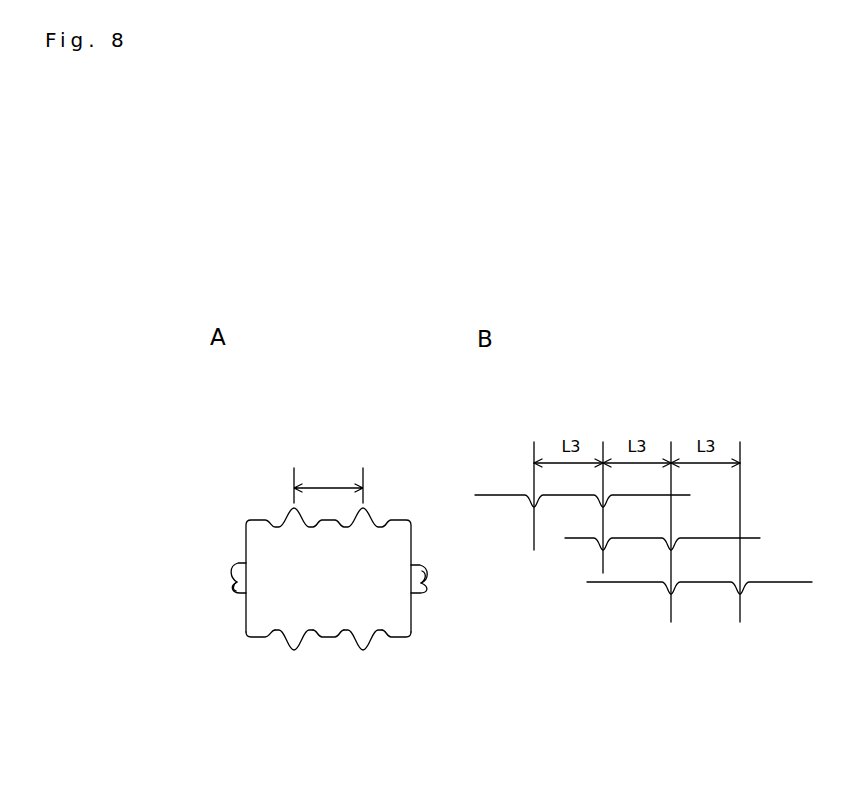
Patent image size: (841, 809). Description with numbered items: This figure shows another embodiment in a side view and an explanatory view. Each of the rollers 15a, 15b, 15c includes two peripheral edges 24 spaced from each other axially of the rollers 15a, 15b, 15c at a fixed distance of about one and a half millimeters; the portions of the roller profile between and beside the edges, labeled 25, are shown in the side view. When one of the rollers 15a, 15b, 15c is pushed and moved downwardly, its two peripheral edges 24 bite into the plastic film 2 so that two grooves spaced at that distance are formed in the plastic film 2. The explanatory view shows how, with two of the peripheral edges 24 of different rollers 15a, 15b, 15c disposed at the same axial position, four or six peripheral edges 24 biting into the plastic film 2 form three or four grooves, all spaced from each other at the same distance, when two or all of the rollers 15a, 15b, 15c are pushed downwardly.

The plastic film 2 is at (495, 494).
The roller 15a is at (288, 546).
The roller 15b is at (288, 546).
The roller 15c is at (265, 550).
The peripheral edge 24 is at (282, 641).
The flat portion 25 is at (255, 639).